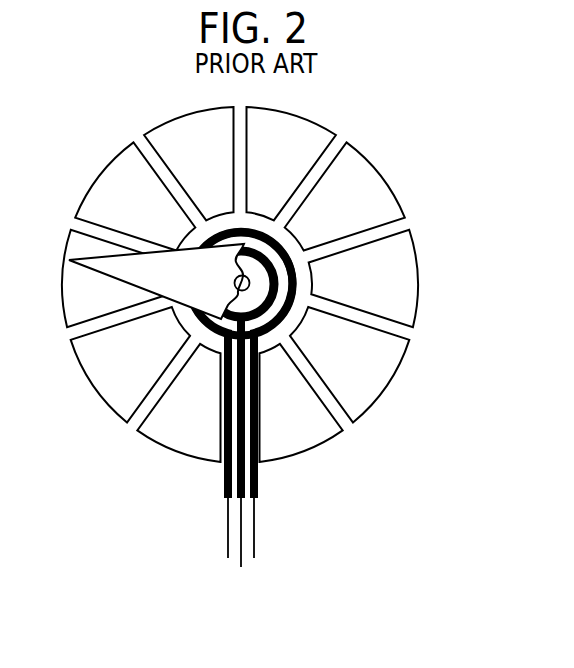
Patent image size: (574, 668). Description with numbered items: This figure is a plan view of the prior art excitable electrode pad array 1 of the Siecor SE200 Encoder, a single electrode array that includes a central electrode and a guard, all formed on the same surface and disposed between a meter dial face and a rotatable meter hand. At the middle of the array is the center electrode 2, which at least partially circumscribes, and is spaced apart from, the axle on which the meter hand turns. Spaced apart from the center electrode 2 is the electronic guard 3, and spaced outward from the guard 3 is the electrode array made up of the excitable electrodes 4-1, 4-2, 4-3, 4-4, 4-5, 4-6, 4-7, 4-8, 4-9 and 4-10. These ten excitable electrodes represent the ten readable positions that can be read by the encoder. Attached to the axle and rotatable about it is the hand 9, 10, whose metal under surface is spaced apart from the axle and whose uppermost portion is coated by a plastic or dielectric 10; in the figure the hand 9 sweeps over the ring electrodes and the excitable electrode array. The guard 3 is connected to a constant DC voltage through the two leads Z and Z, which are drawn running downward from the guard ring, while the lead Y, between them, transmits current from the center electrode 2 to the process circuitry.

The excitable electrode pad array 1 is at (460, 130).
The center electrode 2 is at (260, 247).
The guard 3 is at (293, 303).
The excitable electrode 4-1 is at (258, 158).
The excitable electrode 4-2 is at (322, 213).
The excitable electrode 4-3 is at (350, 302).
The excitable electrode 4-4 is at (328, 377).
The excitable electrode 4-5 is at (262, 427).
The excitable electrode 4-6 is at (172, 427).
The excitable electrode 4-7 is at (102, 362).
The excitable electrode 4-8 is at (68, 300).
The excitable electrode 4-9 is at (106, 213).
The excitable electrode 4-10 is at (182, 158).
The hand 9 is at (159, 281).
The dielectric 10 is at (159, 290).
The lead Z is at (228, 558).
The lead Y is at (241, 567).